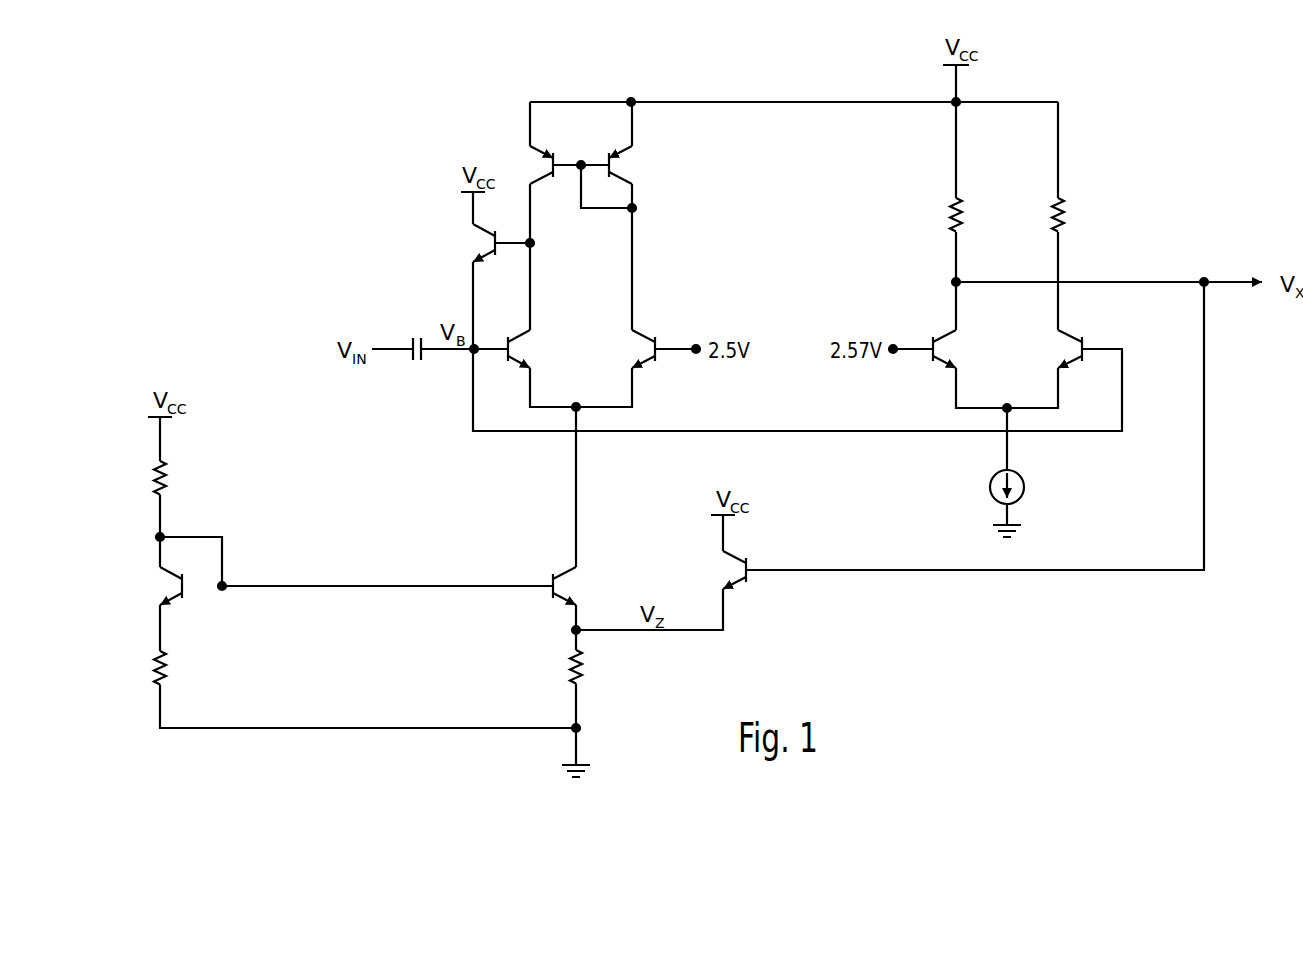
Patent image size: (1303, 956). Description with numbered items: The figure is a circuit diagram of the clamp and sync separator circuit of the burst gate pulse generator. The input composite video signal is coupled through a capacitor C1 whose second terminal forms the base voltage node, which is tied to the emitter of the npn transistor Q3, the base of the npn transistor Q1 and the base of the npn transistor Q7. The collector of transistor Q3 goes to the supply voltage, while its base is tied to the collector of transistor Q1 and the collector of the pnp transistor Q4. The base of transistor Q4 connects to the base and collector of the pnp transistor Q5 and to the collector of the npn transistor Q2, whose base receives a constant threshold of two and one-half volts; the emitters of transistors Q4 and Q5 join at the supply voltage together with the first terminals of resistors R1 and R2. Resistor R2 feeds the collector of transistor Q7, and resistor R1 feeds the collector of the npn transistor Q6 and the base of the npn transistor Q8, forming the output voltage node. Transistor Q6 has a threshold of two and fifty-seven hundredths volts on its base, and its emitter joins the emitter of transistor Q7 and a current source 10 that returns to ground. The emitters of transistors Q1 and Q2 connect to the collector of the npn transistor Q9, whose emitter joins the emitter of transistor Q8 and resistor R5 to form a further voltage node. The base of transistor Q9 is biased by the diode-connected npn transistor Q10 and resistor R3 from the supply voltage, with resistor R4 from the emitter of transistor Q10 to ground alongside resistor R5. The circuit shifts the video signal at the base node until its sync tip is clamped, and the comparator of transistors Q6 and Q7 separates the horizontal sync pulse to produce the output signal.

The current source 10 is at (1024, 487).
The npn transistor Q1 is at (531, 349).
The npn transistor Q2 is at (631, 349).
The npn transistor Q3 is at (471, 243).
The pnp transistor Q4 is at (530, 165).
The pnp transistor Q5 is at (631, 165).
The npn transistor Q6 is at (956, 349).
The npn transistor Q7 is at (1057, 349).
The npn transistor Q8 is at (723, 570).
The npn transistor Q9 is at (577, 586).
The npn transistor Q10 is at (155, 586).
The resistor R1 is at (938, 215).
The resistor R2 is at (1042, 215).
The resistor R3 is at (145, 478).
The resistor R4 is at (145, 668).
The resistor R5 is at (562, 667).
The capacitor C1 is at (414, 365).